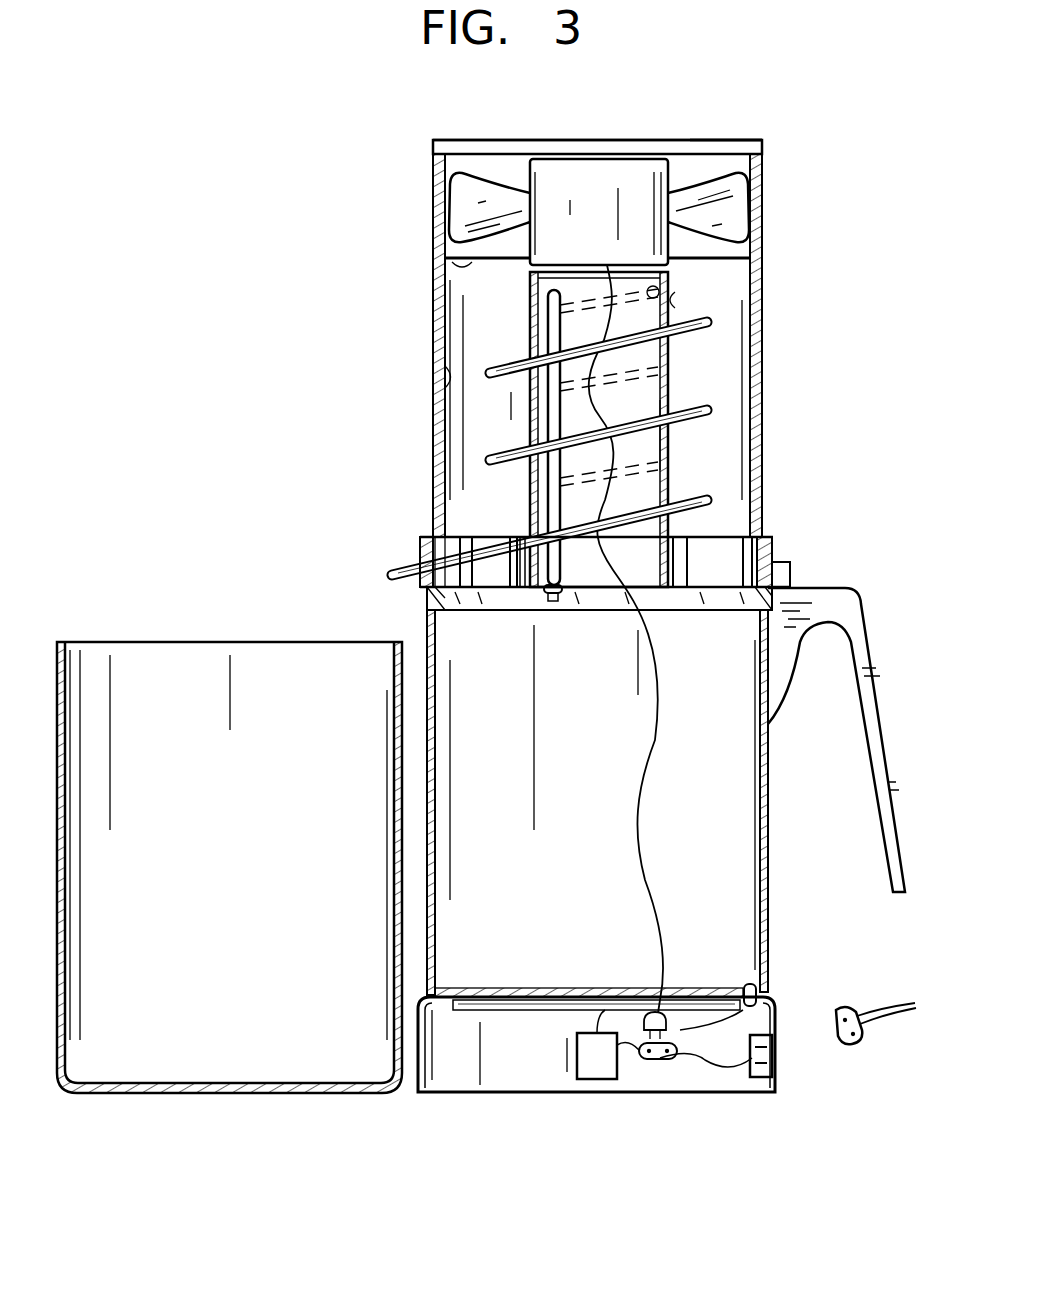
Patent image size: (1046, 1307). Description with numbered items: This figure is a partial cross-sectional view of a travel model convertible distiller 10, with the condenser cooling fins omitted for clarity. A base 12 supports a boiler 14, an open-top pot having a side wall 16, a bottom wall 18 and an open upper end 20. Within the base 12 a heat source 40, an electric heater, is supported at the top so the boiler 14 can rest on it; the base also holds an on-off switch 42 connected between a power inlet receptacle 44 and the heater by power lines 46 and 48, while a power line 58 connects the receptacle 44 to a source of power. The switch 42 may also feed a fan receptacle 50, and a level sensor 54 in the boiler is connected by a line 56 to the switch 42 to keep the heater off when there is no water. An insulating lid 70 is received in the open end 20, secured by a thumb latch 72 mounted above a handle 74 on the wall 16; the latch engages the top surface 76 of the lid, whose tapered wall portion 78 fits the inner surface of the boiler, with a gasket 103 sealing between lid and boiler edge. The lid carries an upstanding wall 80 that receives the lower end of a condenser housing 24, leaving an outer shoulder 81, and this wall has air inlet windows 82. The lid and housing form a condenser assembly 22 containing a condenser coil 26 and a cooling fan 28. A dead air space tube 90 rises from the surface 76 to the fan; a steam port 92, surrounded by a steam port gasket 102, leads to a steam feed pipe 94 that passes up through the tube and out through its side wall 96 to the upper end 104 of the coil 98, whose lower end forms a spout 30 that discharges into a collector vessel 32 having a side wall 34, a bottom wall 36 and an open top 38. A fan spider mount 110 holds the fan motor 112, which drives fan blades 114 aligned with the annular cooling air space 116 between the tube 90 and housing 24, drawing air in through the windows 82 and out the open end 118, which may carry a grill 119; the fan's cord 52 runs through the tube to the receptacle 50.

The travel model convertible distiller 10 is at (858, 322).
The base 12 is at (500, 1090).
The boiler 14 is at (740, 920).
The side wall 16 is at (758, 866).
The bottom wall 18 is at (540, 1000).
The open upper end 20 is at (412, 591).
The condenser assembly 22 is at (842, 263).
The condenser housing 24 is at (768, 256).
The condenser coil 26 is at (714, 411).
The cooling fan 28 is at (628, 158).
The spout 30 is at (402, 562).
The collector vessel 32 is at (285, 1104).
The side wall 34 is at (75, 880).
The bottom wall 36 is at (140, 1082).
The open top 38 is at (145, 632).
The heat source 40 is at (472, 1008).
The on-off switch 42 is at (600, 1078).
The power inlet receptacle 44 is at (776, 1062).
The power line 46 is at (750, 1082).
The power line 48 is at (575, 1032).
The fan receptacle 50 is at (660, 1060).
The line 52 is at (460, 312).
The level sensor 54 is at (445, 436).
The line 56 is at (445, 378).
The power line 58 is at (886, 1016).
The insulating lid 70 is at (506, 640).
The thumb latch 72 is at (782, 566).
The handle 74 is at (862, 606).
The top surface 76 is at (736, 602).
The tapered wall portion 78 is at (468, 626).
The upstanding wall 80 is at (738, 537).
The outer shoulder 81 is at (425, 530).
The air inlet windows 82 is at (746, 480).
The dead air space tube 90 is at (672, 362).
The steam port 92 is at (551, 608).
The steam feed pipe 94 is at (550, 330).
The side wall 96 is at (676, 302).
The condenser coil 98 is at (686, 420).
The steam port gasket 102 is at (586, 610).
The gasket 103 is at (770, 612).
The upper end 104 is at (447, 286).
The fan spider mount 110 is at (437, 258).
The fan motor 112 is at (588, 180).
The fan blades 114 is at (500, 190).
The annular cooling air space 116 is at (752, 374).
The open end 118 is at (763, 151).
The grill 119 is at (710, 147).